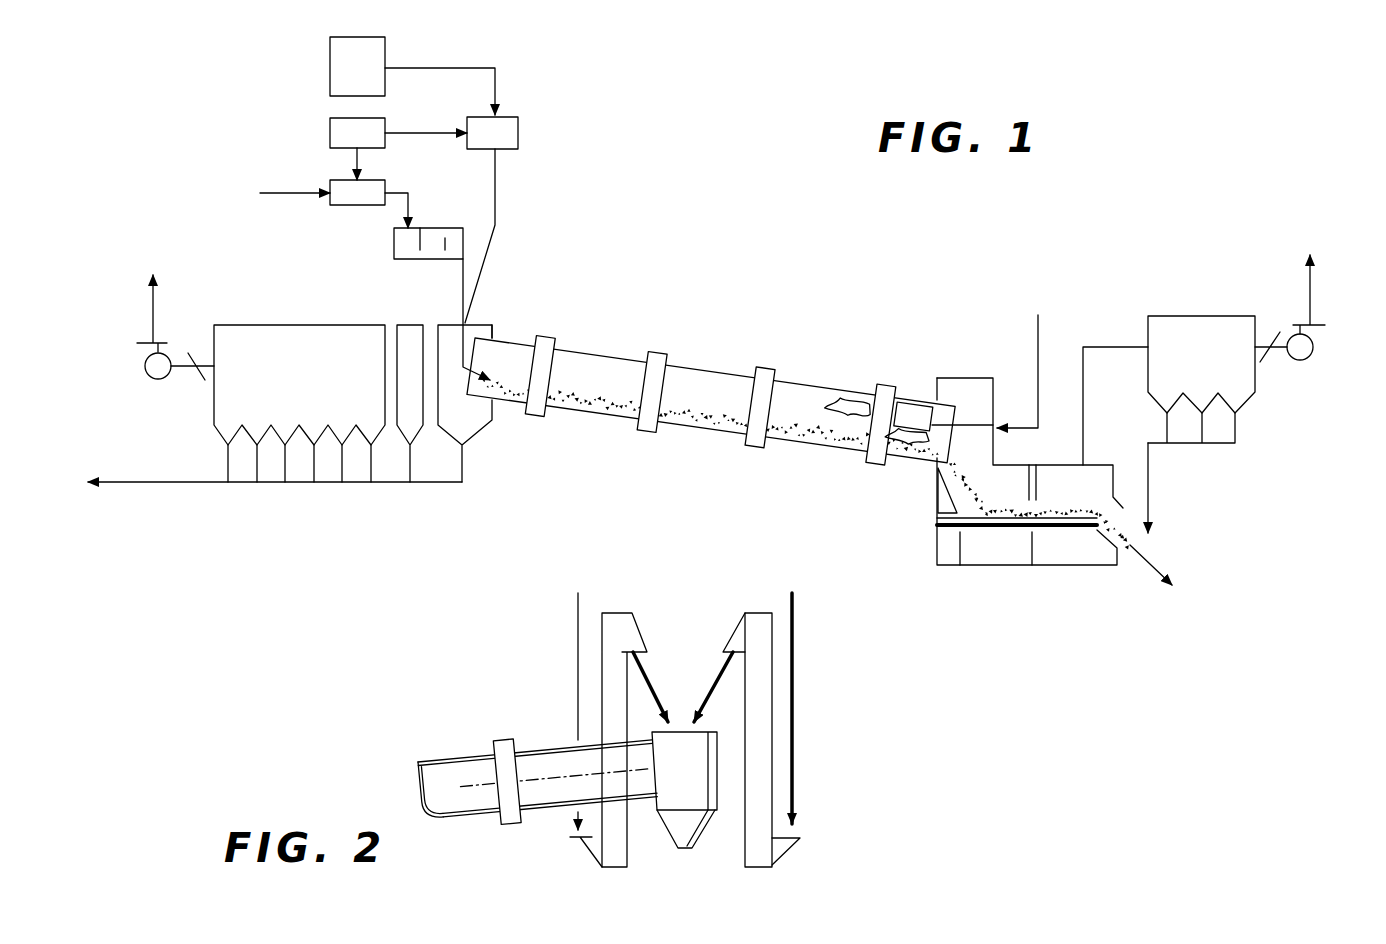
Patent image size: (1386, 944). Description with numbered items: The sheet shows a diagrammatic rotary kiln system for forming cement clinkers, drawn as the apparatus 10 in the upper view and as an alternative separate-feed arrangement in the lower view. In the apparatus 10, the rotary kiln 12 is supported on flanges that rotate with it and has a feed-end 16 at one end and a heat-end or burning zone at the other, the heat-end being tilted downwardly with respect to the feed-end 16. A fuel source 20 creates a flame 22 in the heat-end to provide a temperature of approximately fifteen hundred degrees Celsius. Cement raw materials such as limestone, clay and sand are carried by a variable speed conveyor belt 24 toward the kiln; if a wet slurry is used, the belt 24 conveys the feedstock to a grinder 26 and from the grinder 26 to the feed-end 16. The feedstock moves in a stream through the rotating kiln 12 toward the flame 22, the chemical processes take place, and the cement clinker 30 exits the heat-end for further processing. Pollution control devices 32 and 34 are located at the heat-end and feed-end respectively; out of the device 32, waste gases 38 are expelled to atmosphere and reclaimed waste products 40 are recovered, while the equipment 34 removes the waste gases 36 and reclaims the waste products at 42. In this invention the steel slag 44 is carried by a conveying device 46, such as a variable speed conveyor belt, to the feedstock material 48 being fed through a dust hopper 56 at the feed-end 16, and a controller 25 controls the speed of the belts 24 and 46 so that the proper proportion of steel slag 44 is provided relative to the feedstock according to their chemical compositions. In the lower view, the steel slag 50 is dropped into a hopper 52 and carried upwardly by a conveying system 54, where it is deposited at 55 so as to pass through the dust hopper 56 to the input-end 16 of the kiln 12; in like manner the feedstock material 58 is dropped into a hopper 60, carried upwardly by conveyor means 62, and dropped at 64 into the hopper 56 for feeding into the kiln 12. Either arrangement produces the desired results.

In FIG. 1, the apparatus 10 is at (682, 239).
In FIG. 1, the rotary kiln 12 is at (710, 387).
In FIG. 2, the rotary kiln 12 is at (527, 773).
In FIG. 1, the feed-end 16 is at (496, 358).
In FIG. 2, the feed-end 16 is at (552, 783).
In FIG. 1, the fuel source 20 is at (1038, 350).
In FIG. 1, the flame 22 is at (916, 428).
In FIG. 1, the variable speed conveyor belt 24 is at (262, 192).
In FIG. 1, the controller 25 is at (340, 127).
In FIG. 1, the grinder 26 is at (400, 240).
In FIG. 1, the cement clinker 30 is at (1130, 545).
In FIG. 1, the pollution control device 32 is at (1203, 316).
In FIG. 1, the pollution control device 34 is at (447, 325).
In FIG. 1, the waste gases 36 is at (150, 320).
In FIG. 1, the waste gases 38 is at (1312, 302).
In FIG. 1, the reclaimed waste products 40 is at (1150, 486).
In FIG. 1, the reclaimed waste products 42 is at (205, 483).
In FIG. 1, the steel slag 44 is at (345, 67).
In FIG. 1, the conveying device 46 is at (518, 130).
In FIG. 1, the feedstock material 48 is at (462, 347).
In FIG. 2, the steel slag 50 is at (797, 642).
In FIG. 2, the hopper 52 is at (802, 840).
In FIG. 2, the conveying system 54 is at (755, 735).
In FIG. 2, the deposit point 55 is at (710, 683).
In FIG. 2, the dust hopper 56 is at (665, 773).
In FIG. 2, the feedstock material 58 is at (577, 632).
In FIG. 2, the hopper 60 is at (583, 850).
In FIG. 2, the conveyor means 62 is at (593, 708).
In FIG. 2, the drop point 64 is at (647, 670).